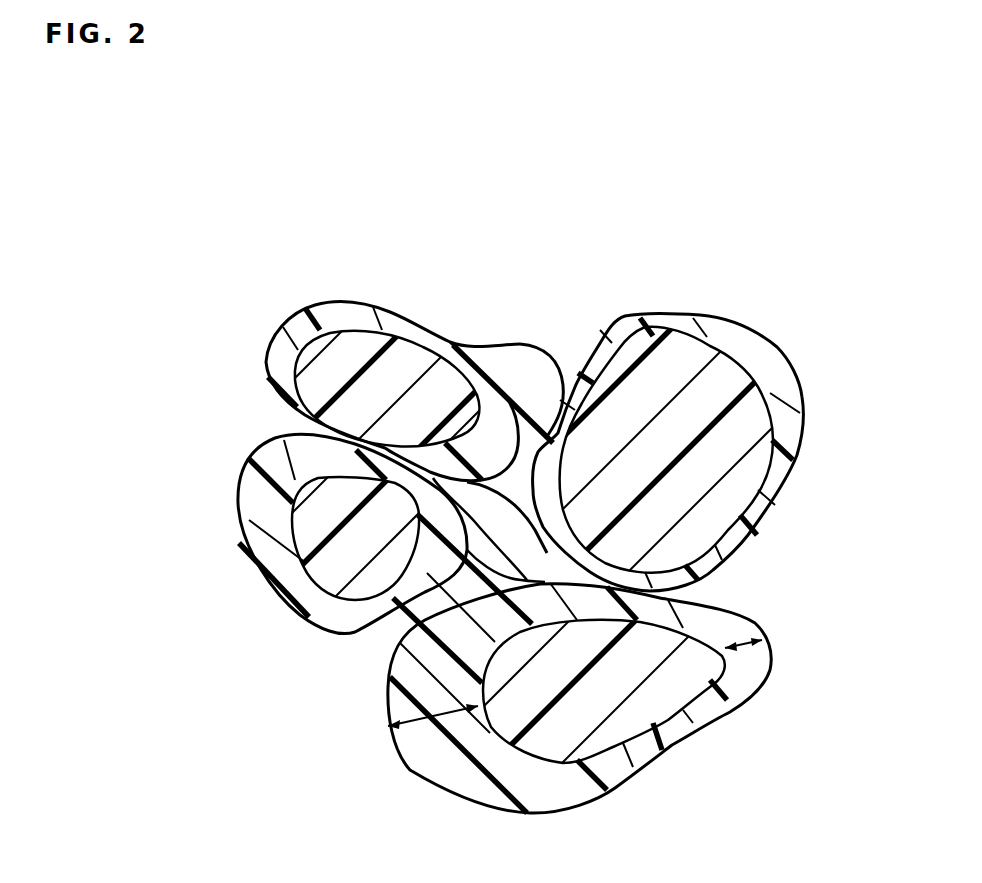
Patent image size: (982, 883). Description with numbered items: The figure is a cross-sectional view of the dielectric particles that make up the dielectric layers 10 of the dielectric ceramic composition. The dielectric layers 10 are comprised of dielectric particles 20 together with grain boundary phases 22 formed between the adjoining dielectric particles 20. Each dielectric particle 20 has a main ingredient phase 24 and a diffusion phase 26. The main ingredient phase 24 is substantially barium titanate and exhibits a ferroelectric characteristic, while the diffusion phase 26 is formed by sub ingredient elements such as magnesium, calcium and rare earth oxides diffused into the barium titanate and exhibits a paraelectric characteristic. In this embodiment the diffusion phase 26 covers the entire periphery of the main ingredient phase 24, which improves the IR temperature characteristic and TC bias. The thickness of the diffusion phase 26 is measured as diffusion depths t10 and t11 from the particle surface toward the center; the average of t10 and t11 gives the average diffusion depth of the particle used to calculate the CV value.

The dielectric layers 10 is at (491, 500).
The dielectric particles 20 is at (363, 302).
The grain boundary phases 22 is at (516, 472).
The main ingredient phase 24 is at (752, 440).
The diffusion phase 26 is at (252, 458).
The diffusion depth t10 is at (412, 745).
The diffusion depth t11 is at (752, 634).